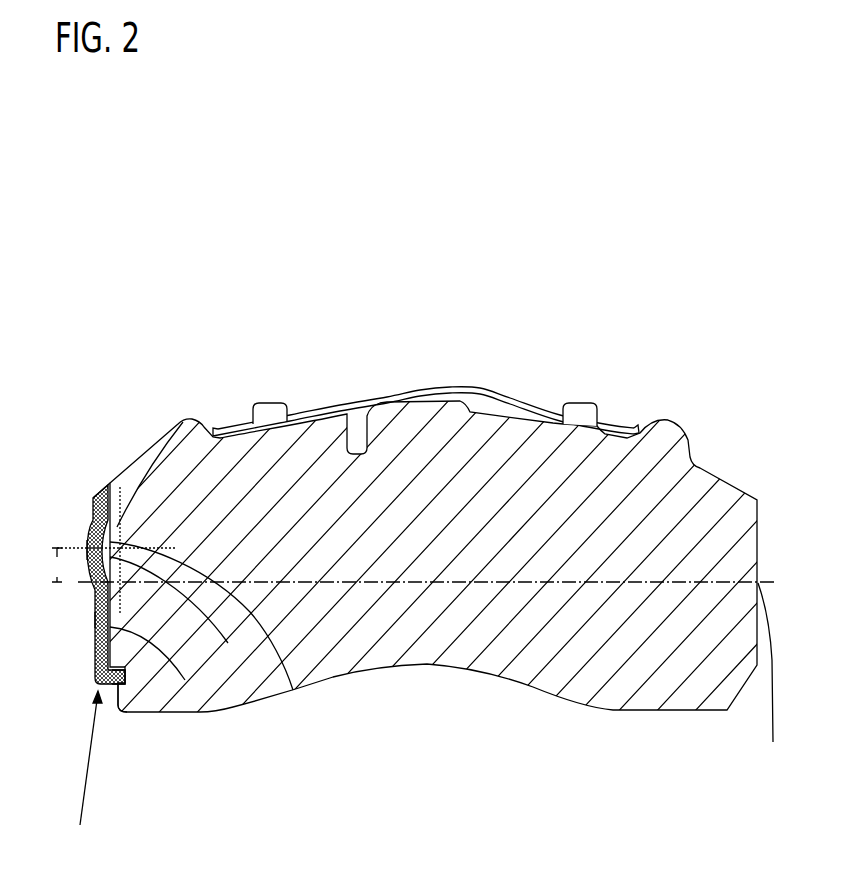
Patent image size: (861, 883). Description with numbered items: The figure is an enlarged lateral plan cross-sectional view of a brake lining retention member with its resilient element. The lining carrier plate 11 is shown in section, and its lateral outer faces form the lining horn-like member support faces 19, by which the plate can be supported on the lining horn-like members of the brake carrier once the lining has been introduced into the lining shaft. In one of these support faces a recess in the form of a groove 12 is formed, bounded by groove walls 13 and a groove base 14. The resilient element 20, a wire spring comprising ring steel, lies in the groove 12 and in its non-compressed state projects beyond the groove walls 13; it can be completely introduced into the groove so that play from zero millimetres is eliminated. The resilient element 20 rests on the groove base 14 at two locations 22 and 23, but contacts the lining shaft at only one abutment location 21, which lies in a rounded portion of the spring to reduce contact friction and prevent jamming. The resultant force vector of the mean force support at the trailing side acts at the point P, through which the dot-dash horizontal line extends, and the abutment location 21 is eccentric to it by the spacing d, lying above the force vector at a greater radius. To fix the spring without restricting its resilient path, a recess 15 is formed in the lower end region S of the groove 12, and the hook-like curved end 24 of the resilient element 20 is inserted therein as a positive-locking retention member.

The lining carrier plate 11 is at (427, 460).
The groove 12 is at (293, 690).
The groove walls 13 is at (91, 632).
The groove base 14 is at (228, 643).
The recess 15 is at (124, 678).
The lining horn-like member support face 19 is at (89, 510).
The resilient element 20 is at (93, 620).
The abutment location 21 is at (86, 548).
The support location 22 is at (113, 522).
The support location 23 is at (185, 680).
The end of the resilient element 24 is at (122, 682).
The lower end region S is at (88, 775).
The point of resultant force vector P is at (779, 692).
The spacing d is at (114, 551).